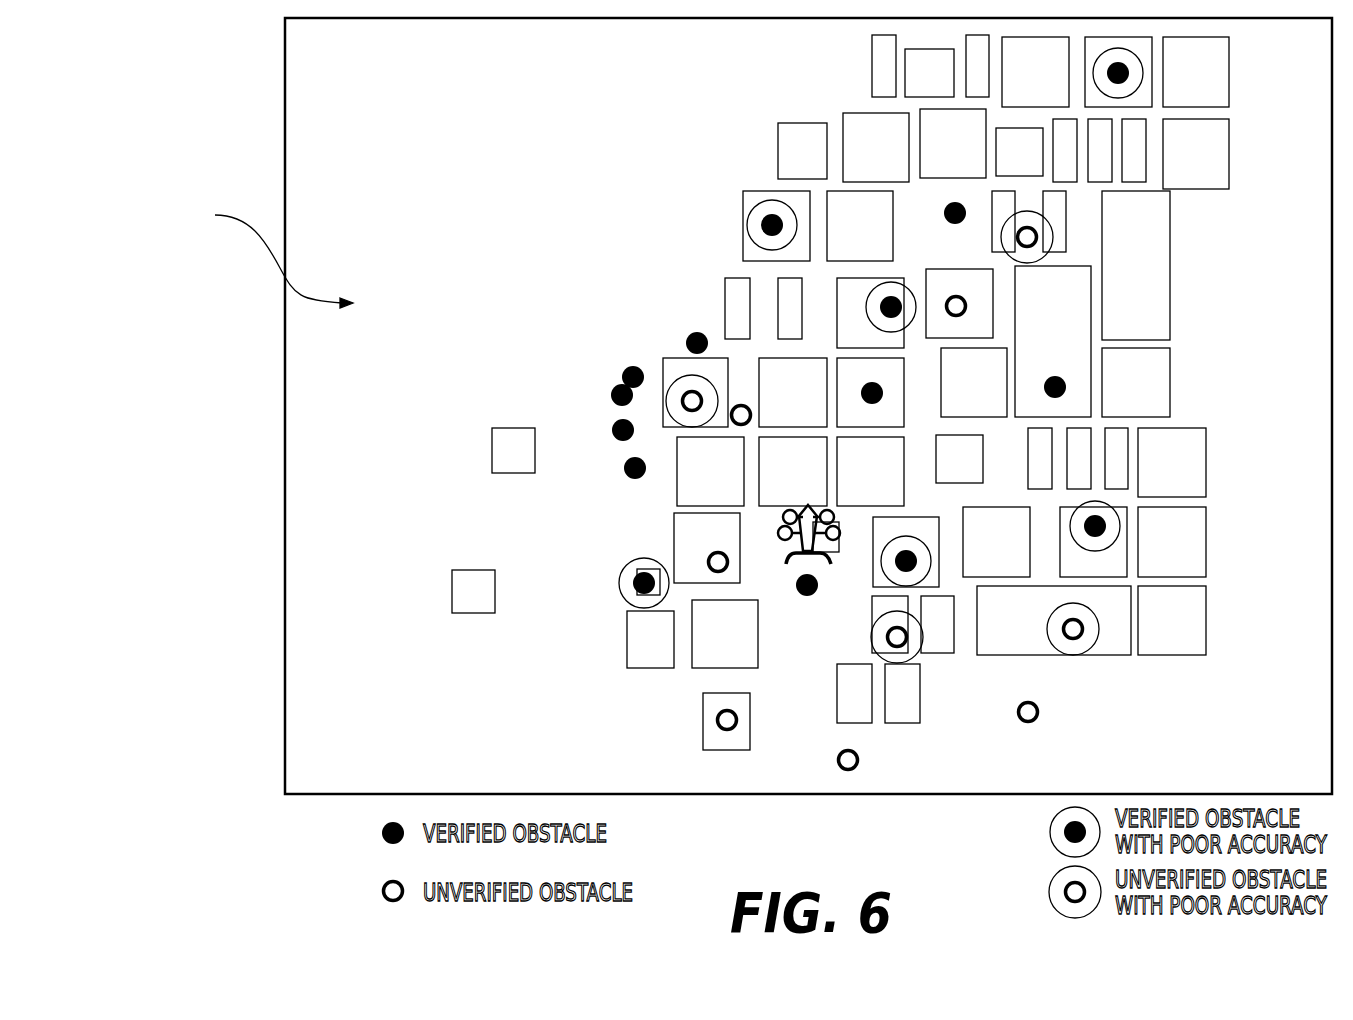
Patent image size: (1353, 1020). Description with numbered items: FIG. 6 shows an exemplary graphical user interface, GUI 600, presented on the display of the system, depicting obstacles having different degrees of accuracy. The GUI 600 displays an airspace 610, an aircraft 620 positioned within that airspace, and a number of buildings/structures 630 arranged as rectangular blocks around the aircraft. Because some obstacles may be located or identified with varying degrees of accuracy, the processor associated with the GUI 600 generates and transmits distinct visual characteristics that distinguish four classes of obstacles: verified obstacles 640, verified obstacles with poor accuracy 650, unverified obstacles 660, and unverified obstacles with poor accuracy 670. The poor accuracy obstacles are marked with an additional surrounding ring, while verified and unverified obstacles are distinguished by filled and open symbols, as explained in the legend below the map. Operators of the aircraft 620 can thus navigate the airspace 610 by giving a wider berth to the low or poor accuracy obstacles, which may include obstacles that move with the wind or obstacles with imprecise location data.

The GUI 600 is at (285, 475).
The airspace 610 is at (263, 255).
The aircraft 620 is at (803, 510).
The buildings/structures 630 is at (1112, 656).
The verified obstacles 640 is at (813, 597).
The verified obstacles with poor accuracy 650 is at (1107, 530).
The unverified obstacles 660 is at (860, 763).
The unverified obstacles with poor accuracy 670 is at (1073, 638).